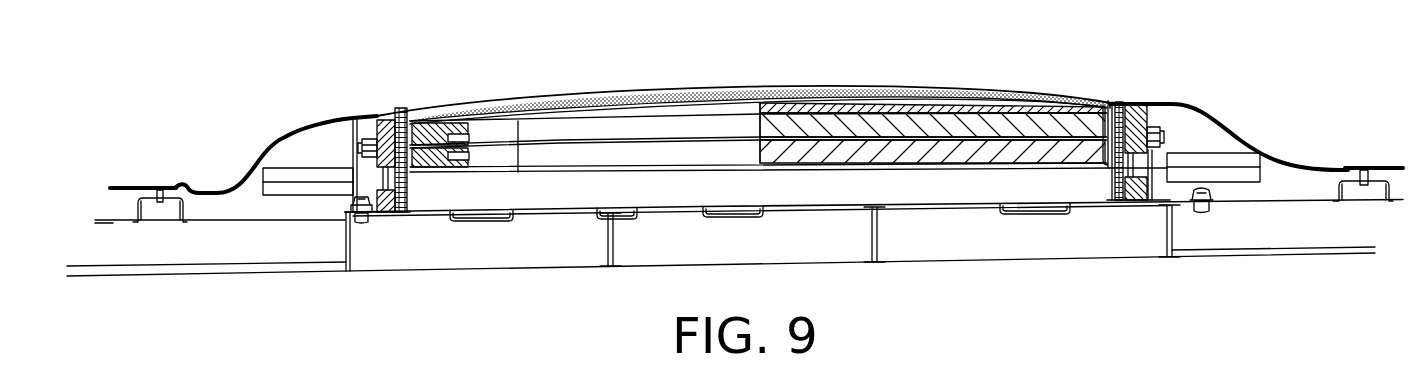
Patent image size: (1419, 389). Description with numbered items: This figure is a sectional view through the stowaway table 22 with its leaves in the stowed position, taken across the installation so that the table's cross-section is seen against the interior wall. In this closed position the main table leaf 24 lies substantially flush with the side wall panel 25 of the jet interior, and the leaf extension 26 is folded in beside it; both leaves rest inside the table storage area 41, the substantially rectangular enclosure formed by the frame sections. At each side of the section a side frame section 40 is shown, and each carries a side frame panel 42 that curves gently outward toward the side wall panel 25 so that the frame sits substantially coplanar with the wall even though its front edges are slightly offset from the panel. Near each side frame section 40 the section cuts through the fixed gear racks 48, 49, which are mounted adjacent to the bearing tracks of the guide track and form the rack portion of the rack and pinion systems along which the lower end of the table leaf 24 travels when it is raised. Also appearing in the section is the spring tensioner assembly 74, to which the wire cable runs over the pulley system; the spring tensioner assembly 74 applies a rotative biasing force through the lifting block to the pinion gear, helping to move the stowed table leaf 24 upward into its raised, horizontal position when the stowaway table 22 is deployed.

The stowaway table 22 is at (887, 70).
The main table leaf 24 is at (748, 88).
The side wall panel 25 is at (141, 187).
The leaf extension 26 is at (1013, 147).
The side frame section 40 is at (380, 127).
The table storage area 41 is at (593, 198).
The side frame panel 42 is at (277, 143).
The fixed gear rack 48 is at (402, 143).
The fixed gear rack 49 is at (1120, 133).
The spring tensioner assembly 74 is at (300, 177).